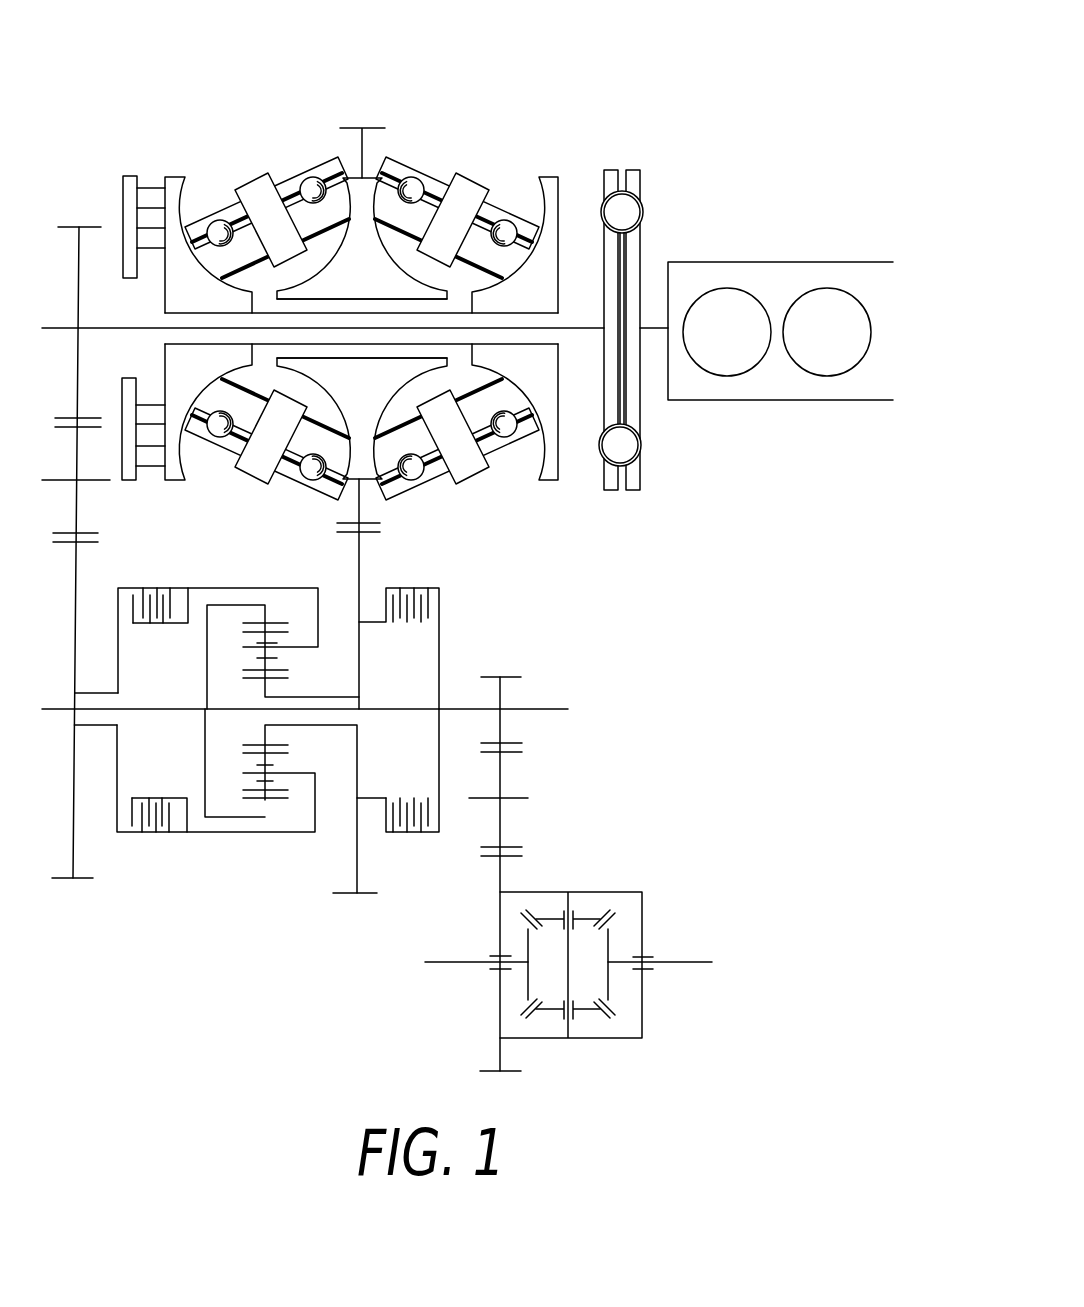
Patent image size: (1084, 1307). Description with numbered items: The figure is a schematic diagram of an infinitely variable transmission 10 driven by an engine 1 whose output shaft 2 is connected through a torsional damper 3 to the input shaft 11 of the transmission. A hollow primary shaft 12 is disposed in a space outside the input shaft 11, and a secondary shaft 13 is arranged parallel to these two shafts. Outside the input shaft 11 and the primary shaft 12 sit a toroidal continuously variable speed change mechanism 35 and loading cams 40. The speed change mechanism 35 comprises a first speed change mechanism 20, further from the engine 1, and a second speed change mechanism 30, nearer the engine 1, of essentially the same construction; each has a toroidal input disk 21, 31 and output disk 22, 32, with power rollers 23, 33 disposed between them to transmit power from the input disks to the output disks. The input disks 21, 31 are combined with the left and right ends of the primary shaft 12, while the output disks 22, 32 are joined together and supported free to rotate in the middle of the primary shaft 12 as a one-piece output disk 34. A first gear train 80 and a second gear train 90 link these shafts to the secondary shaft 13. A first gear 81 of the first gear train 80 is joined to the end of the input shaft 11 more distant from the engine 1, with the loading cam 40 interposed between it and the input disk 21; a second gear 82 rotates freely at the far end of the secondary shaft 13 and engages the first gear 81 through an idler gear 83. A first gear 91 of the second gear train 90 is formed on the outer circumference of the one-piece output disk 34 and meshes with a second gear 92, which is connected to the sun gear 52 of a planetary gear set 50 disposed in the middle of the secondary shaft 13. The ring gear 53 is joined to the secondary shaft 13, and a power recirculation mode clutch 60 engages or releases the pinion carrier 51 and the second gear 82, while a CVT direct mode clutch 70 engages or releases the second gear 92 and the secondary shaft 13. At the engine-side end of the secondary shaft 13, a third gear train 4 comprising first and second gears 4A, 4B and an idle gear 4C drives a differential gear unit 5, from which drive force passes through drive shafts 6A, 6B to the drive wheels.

The engine 1 is at (767, 262).
The output shaft 2 is at (647, 328).
The torsional damper 3 is at (641, 176).
The third gear train 4 is at (521, 850).
The first gear 4A is at (513, 743).
The second gear 4B is at (514, 858).
The idle gear 4C is at (513, 754).
The differential gear unit 5 is at (626, 881).
The drive shaft 6A is at (452, 965).
The drive shaft 6B is at (683, 965).
The infinitely variable transmission 10 is at (390, 538).
The input shaft 11 is at (570, 328).
The primary shaft 12 is at (343, 312).
The secondary shaft 13 is at (468, 709).
The first speed change mechanism 20 is at (267, 281).
The input disk 21 is at (178, 177).
The output disk 22 is at (389, 280).
The power roller 23 is at (296, 185).
The second speed change mechanism 30 is at (466, 283).
The input disk 31 is at (551, 177).
The output disk 32 is at (362, 303).
The power roller 33 is at (440, 188).
The one-piece output disk 34 is at (366, 180).
The toroidal continuously variable speed change mechanism 35 is at (373, 253).
The loading cam 40 is at (116, 200).
The planetary gear set 50 is at (295, 725).
The pinion carrier 51 is at (296, 652).
The sun gear 52 is at (247, 678).
The ring gear 53 is at (283, 622).
The power recirculation mode clutch 60 is at (124, 847).
The CVT direct mode clutch 70 is at (404, 848).
The first gear train 80 is at (74, 553).
The first gear 81 is at (66, 226).
The second gear 82 is at (63, 545).
The idler gear 83 is at (62, 533).
The second gear train 90 is at (353, 906).
The first gear 91 is at (367, 527).
The second gear 92 is at (366, 536).